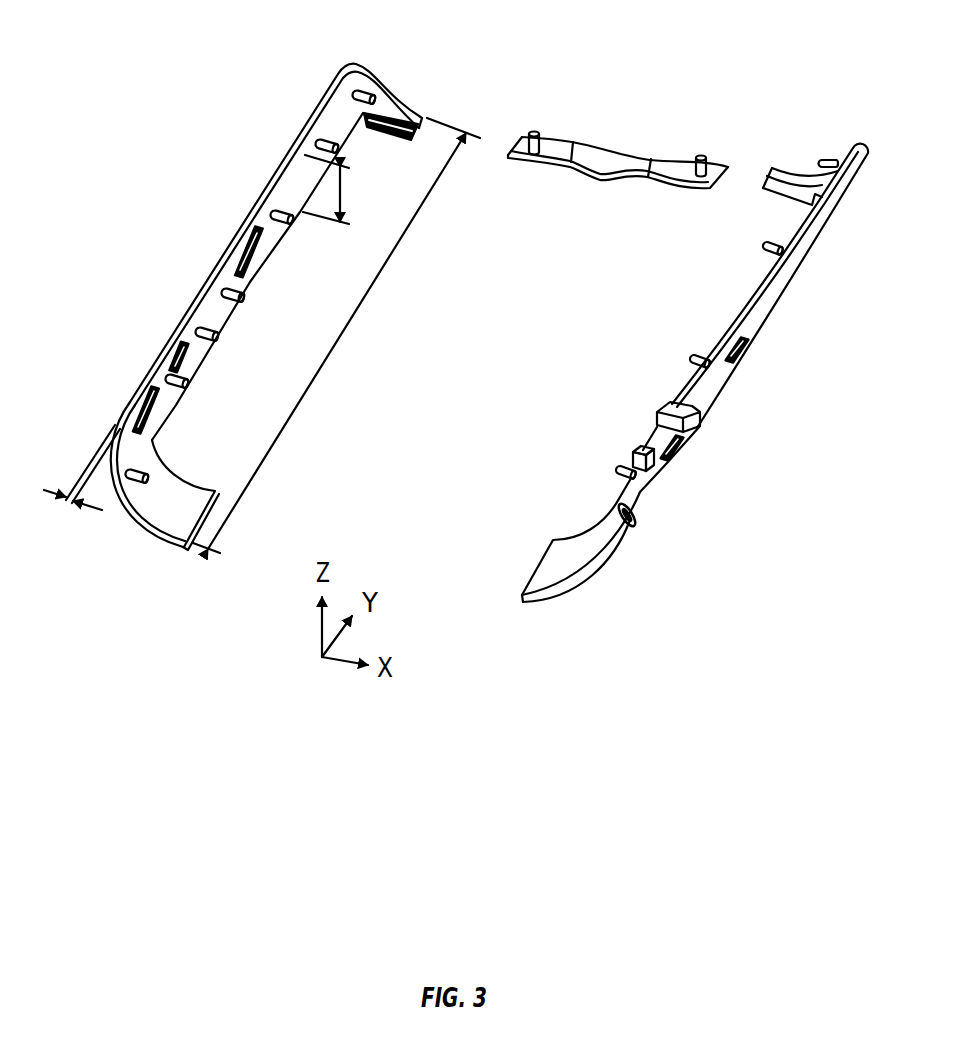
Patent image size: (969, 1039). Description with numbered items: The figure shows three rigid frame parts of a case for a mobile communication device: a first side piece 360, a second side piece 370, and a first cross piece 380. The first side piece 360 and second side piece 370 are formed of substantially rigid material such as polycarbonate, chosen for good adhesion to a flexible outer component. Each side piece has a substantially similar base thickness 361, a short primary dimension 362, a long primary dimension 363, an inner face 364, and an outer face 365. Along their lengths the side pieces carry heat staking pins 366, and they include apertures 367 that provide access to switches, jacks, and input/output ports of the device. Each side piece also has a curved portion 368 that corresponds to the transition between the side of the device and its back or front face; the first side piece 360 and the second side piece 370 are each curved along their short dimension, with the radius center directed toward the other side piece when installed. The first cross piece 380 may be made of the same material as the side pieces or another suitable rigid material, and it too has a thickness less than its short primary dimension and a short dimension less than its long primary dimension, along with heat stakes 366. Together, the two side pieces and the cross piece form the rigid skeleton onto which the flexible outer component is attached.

The first side piece 360 is at (232, 243).
The base thickness 361 is at (92, 507).
The short primary dimension 362 is at (347, 195).
The long primary dimension 363 is at (336, 335).
The inner face 364 is at (340, 122).
The outer face 365 is at (797, 253).
The heat staking pins 366 is at (246, 297).
The apertures 367 is at (748, 338).
The curved portion 368 is at (168, 515).
The second side piece 370 is at (730, 413).
The first cross piece 380 is at (612, 152).